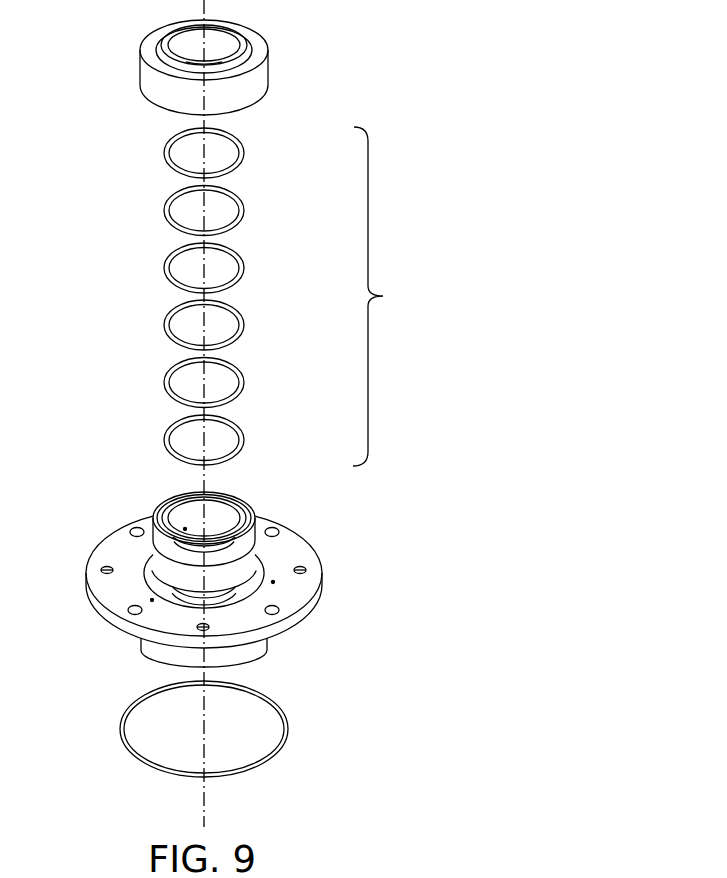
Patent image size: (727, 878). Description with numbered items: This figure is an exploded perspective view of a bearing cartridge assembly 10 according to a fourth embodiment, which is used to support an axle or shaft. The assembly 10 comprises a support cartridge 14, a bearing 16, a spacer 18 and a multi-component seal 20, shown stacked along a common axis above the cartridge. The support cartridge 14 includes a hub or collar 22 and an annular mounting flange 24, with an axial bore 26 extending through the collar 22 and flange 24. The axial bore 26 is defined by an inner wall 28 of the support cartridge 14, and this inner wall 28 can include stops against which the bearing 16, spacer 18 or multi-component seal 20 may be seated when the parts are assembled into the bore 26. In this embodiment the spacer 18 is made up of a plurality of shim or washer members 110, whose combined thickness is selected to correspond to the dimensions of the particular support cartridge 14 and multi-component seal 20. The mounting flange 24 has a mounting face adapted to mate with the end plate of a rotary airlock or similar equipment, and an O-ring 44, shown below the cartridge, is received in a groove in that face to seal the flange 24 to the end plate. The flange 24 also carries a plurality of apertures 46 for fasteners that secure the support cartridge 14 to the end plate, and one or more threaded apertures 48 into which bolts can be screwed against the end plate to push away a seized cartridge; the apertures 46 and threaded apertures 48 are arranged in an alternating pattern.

The bearing cartridge assembly 10 is at (344, 439).
The support cartridge 14 is at (224, 590).
The bearing 16 is at (276, 65).
The spacer 18 is at (380, 296).
The multi-component seal 20 is at (250, 501).
The hub or collar 22 is at (240, 654).
The annular mounting flange 24 is at (314, 607).
The axial bore 26 is at (156, 573).
The inner wall 28 is at (252, 567).
The O-ring 44 is at (300, 724).
The apertures 46 is at (130, 610).
The threaded apertures 48 is at (102, 569).
The shim or washer members 110 is at (246, 151).